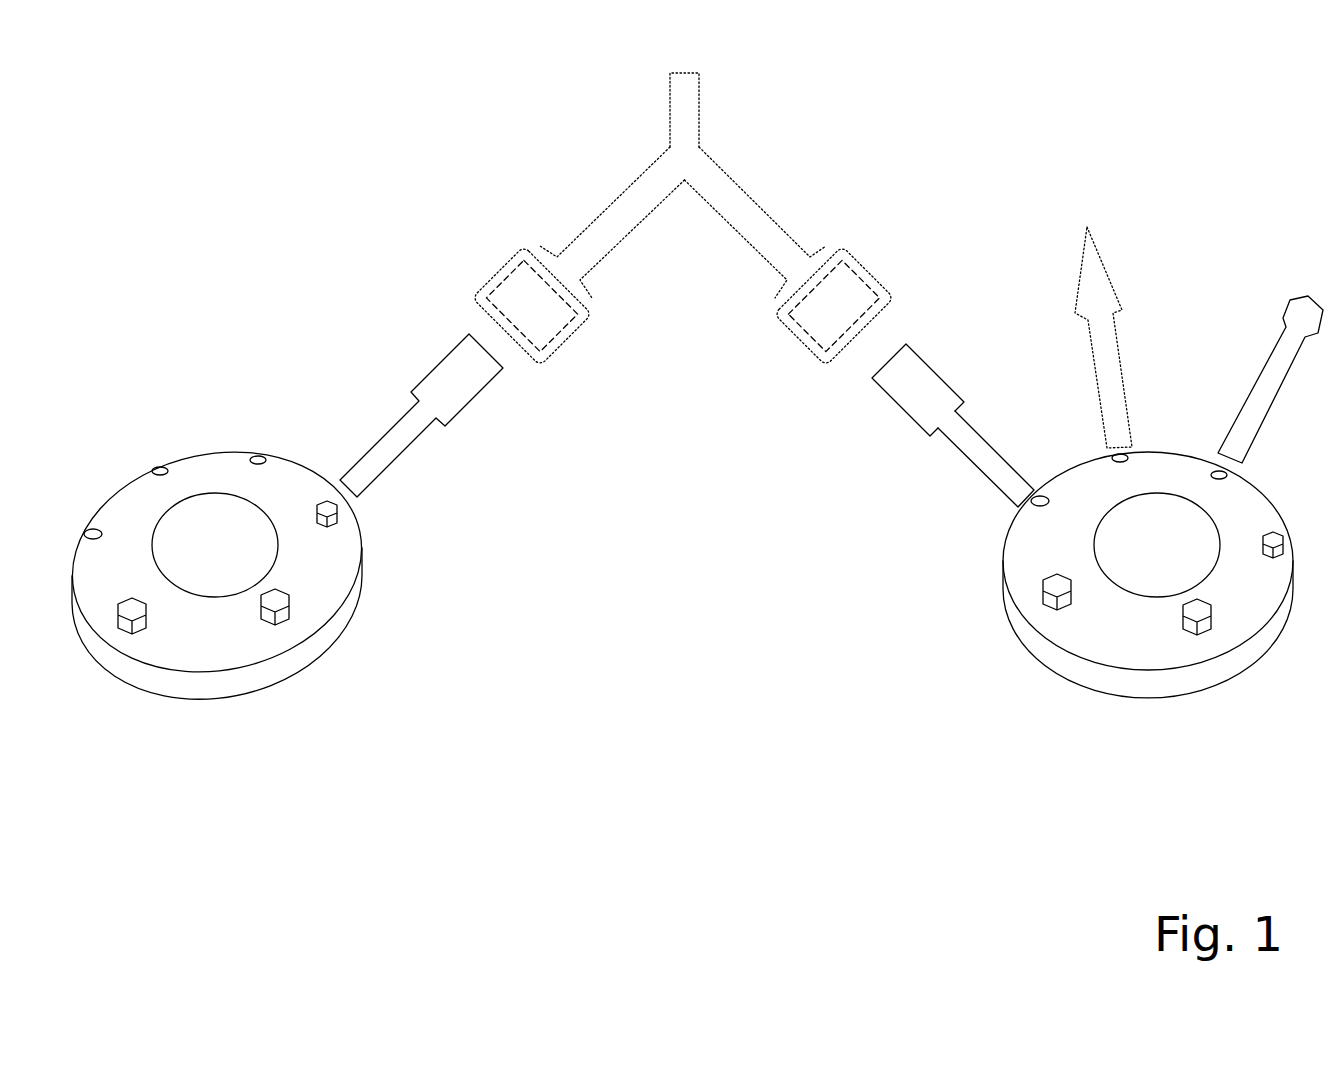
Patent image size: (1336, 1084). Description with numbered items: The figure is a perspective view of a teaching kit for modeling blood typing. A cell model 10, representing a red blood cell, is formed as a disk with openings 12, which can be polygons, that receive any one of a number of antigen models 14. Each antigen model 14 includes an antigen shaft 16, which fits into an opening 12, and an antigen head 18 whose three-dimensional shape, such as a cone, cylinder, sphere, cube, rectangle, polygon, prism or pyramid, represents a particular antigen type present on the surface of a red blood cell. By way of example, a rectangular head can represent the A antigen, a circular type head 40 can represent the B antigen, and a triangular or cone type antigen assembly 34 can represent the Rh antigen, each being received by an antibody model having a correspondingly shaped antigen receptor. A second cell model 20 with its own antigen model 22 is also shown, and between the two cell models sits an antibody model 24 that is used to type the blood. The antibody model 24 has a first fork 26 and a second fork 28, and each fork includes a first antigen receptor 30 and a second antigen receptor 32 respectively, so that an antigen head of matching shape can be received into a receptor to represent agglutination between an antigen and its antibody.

The cell model 10 is at (1167, 583).
The opening 12 is at (1197, 622).
The antigen model 14 is at (957, 409).
The antigen shaft 16 is at (988, 389).
The antigen head 18 is at (933, 372).
The second cell model 20 is at (213, 456).
The antigen model 22 is at (367, 411).
The antibody model 24 is at (700, 118).
The first fork 26 is at (765, 213).
The second fork 28 is at (612, 203).
The first antigen receptor 30 is at (853, 273).
The second antigen receptor 32 is at (485, 297).
The triangular or cone type antigen assembly 34 is at (1107, 265).
The circular type head 40 is at (1282, 315).